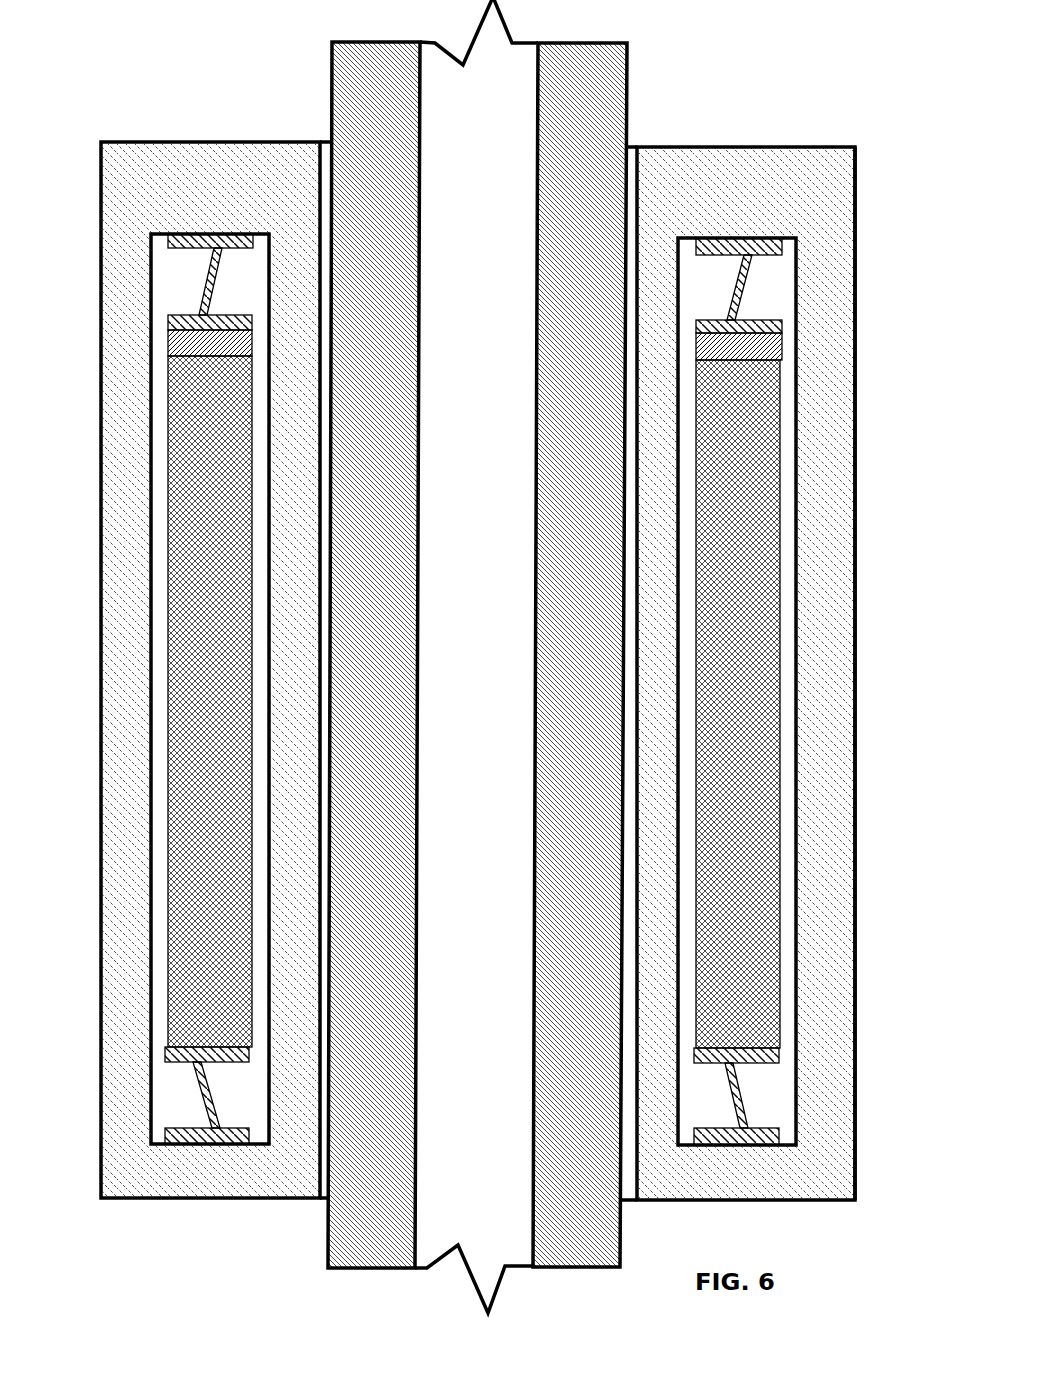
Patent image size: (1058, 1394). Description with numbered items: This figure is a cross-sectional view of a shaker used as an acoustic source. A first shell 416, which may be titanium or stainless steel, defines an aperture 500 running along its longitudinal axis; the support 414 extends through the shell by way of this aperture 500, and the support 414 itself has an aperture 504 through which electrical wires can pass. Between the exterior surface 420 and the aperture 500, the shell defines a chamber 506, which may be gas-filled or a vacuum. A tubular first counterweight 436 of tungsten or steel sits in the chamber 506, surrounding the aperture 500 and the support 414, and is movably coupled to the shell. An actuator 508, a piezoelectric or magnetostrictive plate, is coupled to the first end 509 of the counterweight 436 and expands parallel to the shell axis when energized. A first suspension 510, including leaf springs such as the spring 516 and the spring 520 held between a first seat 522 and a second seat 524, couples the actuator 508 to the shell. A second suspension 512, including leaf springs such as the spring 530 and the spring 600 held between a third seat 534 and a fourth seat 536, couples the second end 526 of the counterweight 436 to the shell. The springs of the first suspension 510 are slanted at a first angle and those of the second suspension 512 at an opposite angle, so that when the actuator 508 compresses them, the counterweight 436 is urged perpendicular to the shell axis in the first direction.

The support 414 is at (388, 143).
The aperture 504 is at (498, 183).
The aperture 500 is at (632, 150).
The first shell 416 is at (757, 183).
The exterior surface 420 is at (857, 186).
The chamber 506 is at (178, 1102).
The first suspension 510 is at (170, 258).
The second suspension 512 is at (762, 1078).
The first seat 522 is at (213, 247).
The leaf spring 516 is at (210, 272).
The second seat 524 is at (172, 318).
The actuator 508 is at (183, 347).
The first end 509 is at (212, 357).
The first counterweight 436 is at (200, 663).
The second end 526 is at (190, 1045).
The third seat 534 is at (165, 1052).
The leaf spring 530 is at (200, 1093).
The fourth seat 536 is at (215, 1144).
The leaf spring 520 is at (750, 272).
The leaf spring 600 is at (733, 1098).